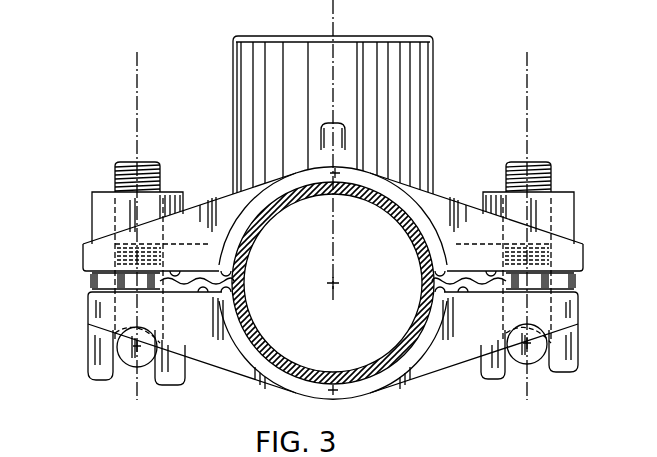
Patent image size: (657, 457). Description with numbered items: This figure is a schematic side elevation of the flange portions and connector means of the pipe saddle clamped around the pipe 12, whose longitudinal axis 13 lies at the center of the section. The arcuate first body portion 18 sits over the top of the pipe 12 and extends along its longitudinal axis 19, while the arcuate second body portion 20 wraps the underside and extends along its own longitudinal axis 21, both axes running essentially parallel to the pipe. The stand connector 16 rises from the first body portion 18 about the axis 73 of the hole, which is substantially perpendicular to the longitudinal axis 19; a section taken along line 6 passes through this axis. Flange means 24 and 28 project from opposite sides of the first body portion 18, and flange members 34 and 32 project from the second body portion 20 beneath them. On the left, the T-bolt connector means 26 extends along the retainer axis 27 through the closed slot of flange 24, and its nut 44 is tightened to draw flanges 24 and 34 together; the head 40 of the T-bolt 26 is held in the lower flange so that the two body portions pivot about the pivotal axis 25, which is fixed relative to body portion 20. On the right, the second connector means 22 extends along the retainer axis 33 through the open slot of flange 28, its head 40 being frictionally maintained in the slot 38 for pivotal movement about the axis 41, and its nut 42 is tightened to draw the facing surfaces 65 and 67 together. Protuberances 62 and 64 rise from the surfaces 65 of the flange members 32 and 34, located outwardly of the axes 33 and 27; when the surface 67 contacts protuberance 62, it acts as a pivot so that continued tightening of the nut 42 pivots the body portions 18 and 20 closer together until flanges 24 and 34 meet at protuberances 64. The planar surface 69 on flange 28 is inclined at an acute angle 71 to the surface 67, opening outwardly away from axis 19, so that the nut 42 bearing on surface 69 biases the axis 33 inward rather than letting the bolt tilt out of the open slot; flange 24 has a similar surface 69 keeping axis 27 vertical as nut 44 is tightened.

The axis of the hole 73 is at (335, 14).
The retainer axis 27 is at (137, 70).
The retainer axis 33 is at (527, 107).
The stand connector 16 is at (433, 93).
The first body portion 18 is at (216, 193).
The longitudinal axis 19 is at (338, 172).
The acute angle 71 is at (200, 252).
The nut 44 is at (92, 212).
The nut 42 is at (585, 214).
The first flange means 24 is at (82, 268).
The flange means 28 is at (586, 262).
The facing surface 67 is at (203, 245).
The planar surface 69 is at (233, 270).
The T-bolt connector means 26 is at (243, 281).
The second connector means 22 is at (428, 281).
The section arrows 6 is at (320, 112).
The pipe 12 is at (283, 197).
The inner arcuate surface / longitudinal axis of the pipe 13 is at (330, 286).
The protuberances 64 is at (90, 299).
The protuberances 62 is at (590, 292).
The flange member 34 is at (84, 333).
The flange member 32 is at (588, 336).
The surface 65 is at (333, 322).
The slot 38 is at (116, 380).
The head 40 is at (140, 368).
The pivotal axis 25 is at (170, 385).
The axis 41 is at (508, 366).
The second body portion 20 is at (372, 398).
The longitudinal axis 21 is at (328, 392).